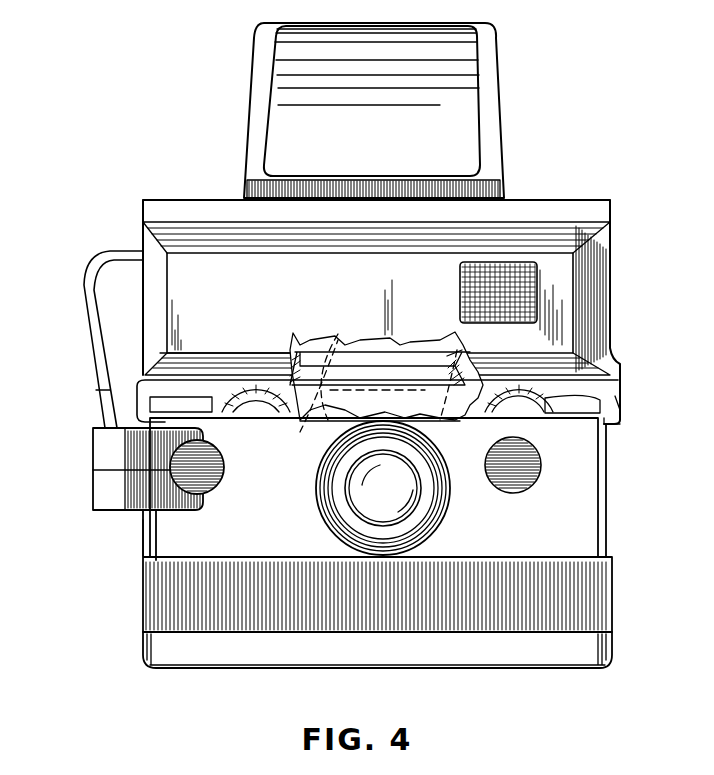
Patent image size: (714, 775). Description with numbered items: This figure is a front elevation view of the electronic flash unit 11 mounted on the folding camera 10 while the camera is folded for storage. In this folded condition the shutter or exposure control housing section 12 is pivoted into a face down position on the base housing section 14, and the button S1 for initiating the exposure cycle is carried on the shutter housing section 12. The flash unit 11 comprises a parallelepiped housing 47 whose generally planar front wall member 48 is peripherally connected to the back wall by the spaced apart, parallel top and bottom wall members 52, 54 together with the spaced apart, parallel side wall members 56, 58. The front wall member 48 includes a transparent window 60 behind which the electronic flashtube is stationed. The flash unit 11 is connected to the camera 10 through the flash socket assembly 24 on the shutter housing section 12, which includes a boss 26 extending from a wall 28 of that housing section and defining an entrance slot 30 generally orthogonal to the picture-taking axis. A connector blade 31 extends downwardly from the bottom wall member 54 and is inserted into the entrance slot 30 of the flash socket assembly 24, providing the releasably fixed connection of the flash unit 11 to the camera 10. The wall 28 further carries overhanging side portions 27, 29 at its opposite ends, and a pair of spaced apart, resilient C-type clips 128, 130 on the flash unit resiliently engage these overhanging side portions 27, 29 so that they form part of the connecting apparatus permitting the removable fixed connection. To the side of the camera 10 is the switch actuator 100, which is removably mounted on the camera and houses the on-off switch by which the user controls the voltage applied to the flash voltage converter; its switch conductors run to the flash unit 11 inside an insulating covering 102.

The camera 10 is at (136, 529).
The electronic flash unit 11 is at (545, 199).
The shutter housing section 12 is at (170, 545).
The base housing section 14 is at (612, 658).
The flash socket assembly 24 is at (465, 372).
The boss 26 is at (386, 384).
The overhanging side portion 27 is at (158, 414).
The wall 28 is at (212, 402).
The overhanging side portion 29 is at (605, 402).
The entrance slot 30 is at (331, 380).
The connector blade 31 is at (311, 392).
The parallelepiped housing 47 is at (218, 200).
The front wall member 48 is at (250, 306).
The top wall member 52 is at (178, 208).
The bottom wall member 54 is at (270, 393).
The side wall member 56 is at (611, 308).
The side wall member 58 is at (143, 315).
The transparent window 60 is at (508, 299).
The switch actuator 100 is at (93, 484).
The insulating covering 102 is at (92, 318).
The C-type clip 128 is at (130, 395).
The C-type clip 130 is at (620, 414).
The button S1 is at (208, 480).